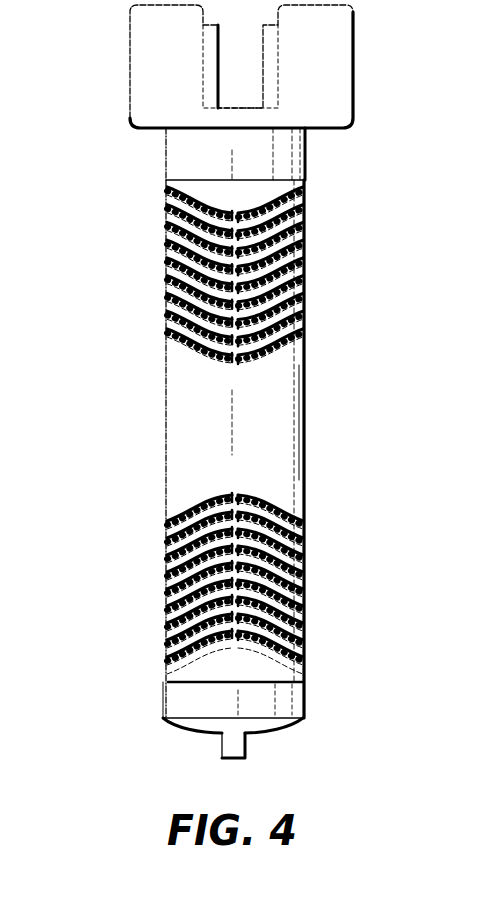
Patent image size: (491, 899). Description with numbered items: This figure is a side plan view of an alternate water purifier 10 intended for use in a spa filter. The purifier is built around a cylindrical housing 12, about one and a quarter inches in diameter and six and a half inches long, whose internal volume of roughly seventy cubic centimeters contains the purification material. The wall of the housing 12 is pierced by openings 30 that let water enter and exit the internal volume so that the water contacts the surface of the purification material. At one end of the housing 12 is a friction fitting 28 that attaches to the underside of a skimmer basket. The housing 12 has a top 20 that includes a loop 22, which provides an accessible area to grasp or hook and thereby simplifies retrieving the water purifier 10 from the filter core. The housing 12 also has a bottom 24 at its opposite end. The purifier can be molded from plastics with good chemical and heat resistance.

The water purifier 10 is at (370, 340).
The housing 12 is at (309, 440).
The top 20 is at (305, 738).
The loop 22 is at (220, 748).
The bottom 24 is at (318, 130).
The friction fitting 28 is at (130, 50).
The openings 30 is at (166, 312).